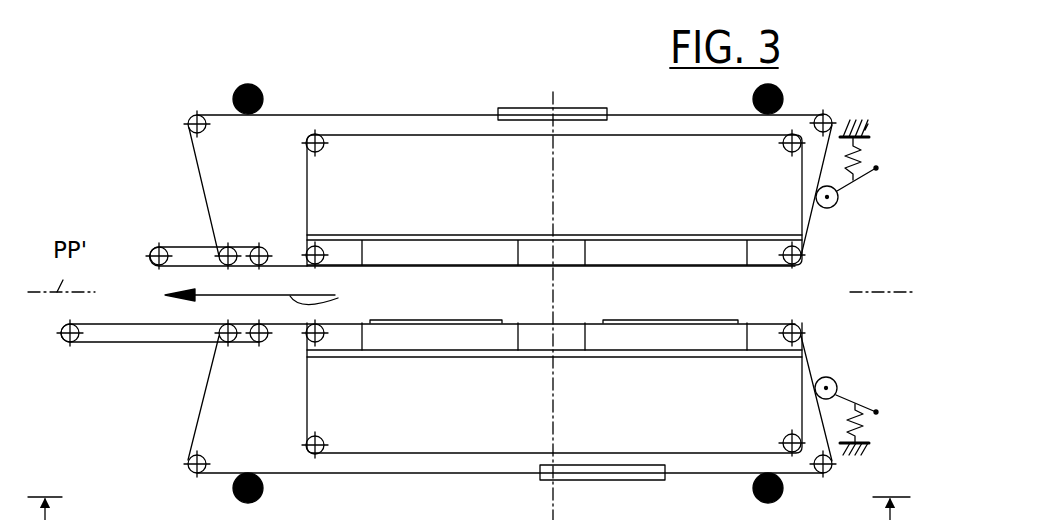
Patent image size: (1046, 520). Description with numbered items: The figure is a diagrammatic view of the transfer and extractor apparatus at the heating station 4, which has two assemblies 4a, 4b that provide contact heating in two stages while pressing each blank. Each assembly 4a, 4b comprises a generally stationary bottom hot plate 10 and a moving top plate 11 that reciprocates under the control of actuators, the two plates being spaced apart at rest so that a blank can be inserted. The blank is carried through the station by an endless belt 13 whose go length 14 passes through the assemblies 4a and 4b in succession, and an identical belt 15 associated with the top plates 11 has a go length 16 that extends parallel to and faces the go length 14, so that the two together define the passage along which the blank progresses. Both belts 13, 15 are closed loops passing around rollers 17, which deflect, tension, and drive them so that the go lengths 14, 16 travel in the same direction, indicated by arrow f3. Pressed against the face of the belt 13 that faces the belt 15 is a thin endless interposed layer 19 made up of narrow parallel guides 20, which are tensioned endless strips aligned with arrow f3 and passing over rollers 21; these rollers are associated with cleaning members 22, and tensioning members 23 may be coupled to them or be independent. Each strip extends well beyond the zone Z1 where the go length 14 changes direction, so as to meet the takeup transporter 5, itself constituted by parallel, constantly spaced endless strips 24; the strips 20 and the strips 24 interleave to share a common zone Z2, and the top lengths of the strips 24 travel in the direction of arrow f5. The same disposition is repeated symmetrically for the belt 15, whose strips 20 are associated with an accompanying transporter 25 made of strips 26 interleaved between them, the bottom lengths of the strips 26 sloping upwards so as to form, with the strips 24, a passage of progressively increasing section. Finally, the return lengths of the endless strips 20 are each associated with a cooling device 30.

The heating station 4 is at (838, 240).
The first press and heater assembly 4a is at (662, 290).
The second press and heater assembly 4b is at (455, 282).
The takeup transporter 5 is at (118, 348).
The bottom hot plate 10 is at (447, 337).
The moving top plate 11 is at (475, 250).
The belt 13 is at (572, 445).
The go length 14 is at (762, 322).
The belt 15 is at (597, 140).
The go length 16 is at (778, 268).
The rollers 17 is at (320, 148).
The interposed layer 19 is at (597, 318).
The narrow guides 20 is at (403, 107).
The rollers 21 is at (190, 118).
The cleaning members 22 is at (248, 84).
The tensioning members 23 is at (830, 378).
The endless strips 24 is at (85, 348).
The accompanying transporter 25 is at (180, 242).
The strips 26 is at (172, 268).
The cooling device 30 is at (562, 106).
The zone Z1 is at (282, 328).
The common zone Z2 is at (238, 350).
The arrow f3 is at (263, 299).
The arrow f5 is at (469, 506).